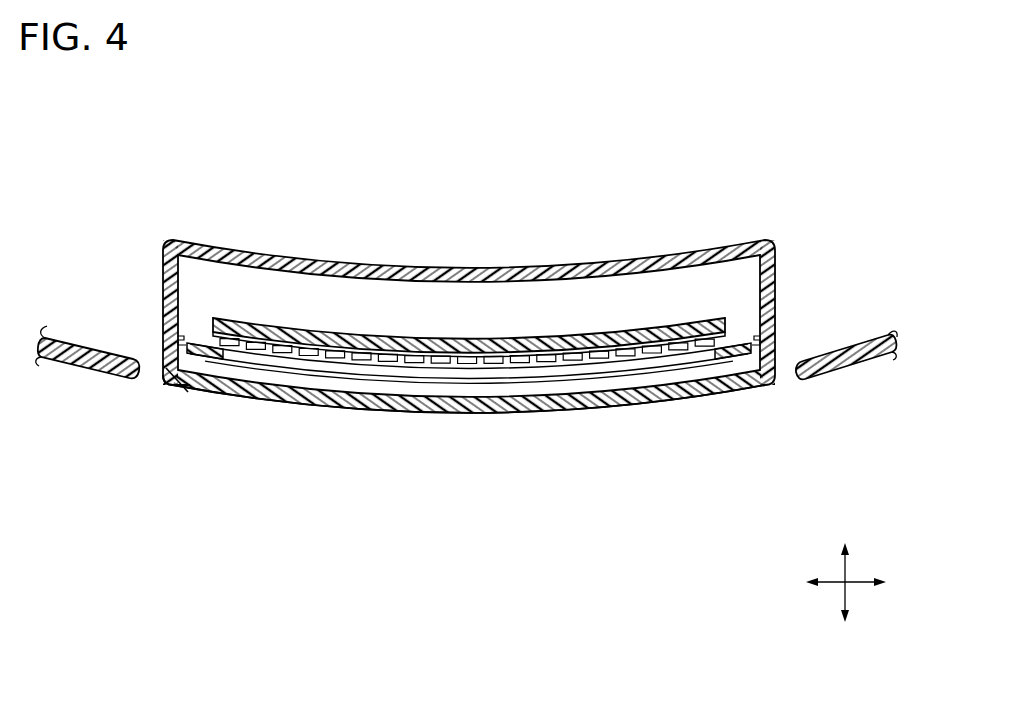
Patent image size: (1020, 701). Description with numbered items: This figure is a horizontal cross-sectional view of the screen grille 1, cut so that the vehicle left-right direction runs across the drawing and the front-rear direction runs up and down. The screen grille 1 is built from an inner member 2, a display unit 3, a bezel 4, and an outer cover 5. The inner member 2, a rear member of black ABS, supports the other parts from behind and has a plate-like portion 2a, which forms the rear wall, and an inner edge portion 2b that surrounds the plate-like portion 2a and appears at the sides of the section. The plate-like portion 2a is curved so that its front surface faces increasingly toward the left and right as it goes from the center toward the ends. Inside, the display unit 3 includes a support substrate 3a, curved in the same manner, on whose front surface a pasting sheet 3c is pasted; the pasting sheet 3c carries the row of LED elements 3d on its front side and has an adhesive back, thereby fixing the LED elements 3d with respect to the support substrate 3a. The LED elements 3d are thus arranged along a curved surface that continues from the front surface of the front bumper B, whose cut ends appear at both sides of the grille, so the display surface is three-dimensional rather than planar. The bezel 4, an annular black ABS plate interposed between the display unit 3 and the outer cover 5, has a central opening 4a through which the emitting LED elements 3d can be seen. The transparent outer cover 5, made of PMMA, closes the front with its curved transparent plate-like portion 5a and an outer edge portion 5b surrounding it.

The screen grille 1 is at (322, 428).
The inner member 2 is at (244, 252).
The plate-like portion 2a is at (507, 266).
The inner edge portion 2b is at (772, 292).
The display unit 3 is at (554, 337).
The support substrate 3a is at (410, 338).
The pasting sheet 3c is at (525, 370).
The LED elements 3d is at (394, 366).
The bezel 4 is at (663, 368).
The opening 4a is at (238, 360).
The outer cover 5 is at (591, 414).
The transparent plate-like portion 5a is at (461, 411).
The outer edge portion 5b is at (172, 378).
The front bumper B is at (74, 360).